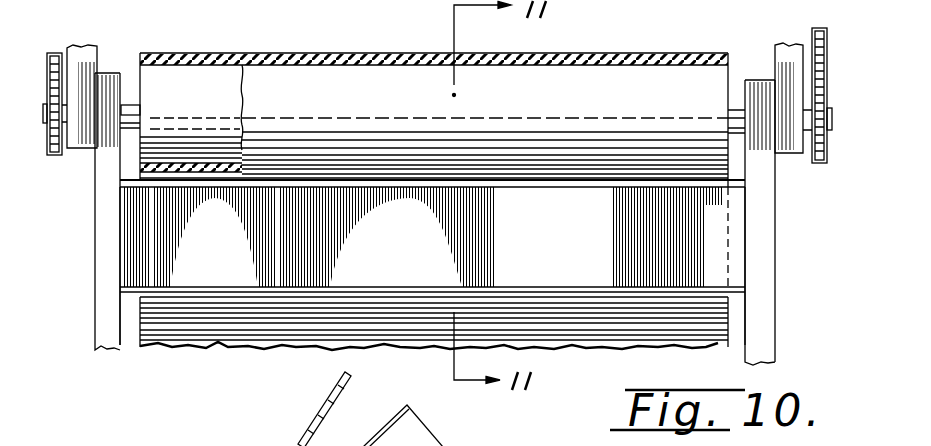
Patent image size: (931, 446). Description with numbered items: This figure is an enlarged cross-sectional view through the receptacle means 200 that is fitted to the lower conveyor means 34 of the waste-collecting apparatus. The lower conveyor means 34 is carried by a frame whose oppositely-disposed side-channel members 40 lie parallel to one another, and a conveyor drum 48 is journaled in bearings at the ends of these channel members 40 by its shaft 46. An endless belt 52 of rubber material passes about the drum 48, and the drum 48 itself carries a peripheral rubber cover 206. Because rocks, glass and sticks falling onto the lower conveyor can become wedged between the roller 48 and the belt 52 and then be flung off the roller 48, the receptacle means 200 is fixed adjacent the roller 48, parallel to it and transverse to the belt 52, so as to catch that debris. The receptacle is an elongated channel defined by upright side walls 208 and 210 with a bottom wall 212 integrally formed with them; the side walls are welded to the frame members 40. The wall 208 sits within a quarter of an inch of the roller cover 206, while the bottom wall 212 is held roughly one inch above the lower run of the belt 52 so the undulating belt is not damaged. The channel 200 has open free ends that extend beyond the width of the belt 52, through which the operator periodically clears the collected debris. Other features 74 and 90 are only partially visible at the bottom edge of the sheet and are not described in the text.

The lower conveyor means 34 is at (213, 338).
The side-channel member 40 is at (108, 258).
The shaft 46 is at (128, 112).
The conveyor drum 48 is at (190, 85).
The endless belt 52 is at (393, 58).
The hatched strip member 74 is at (265, 441).
The angle member 90 is at (371, 425).
The receptacle means 200 is at (698, 239).
The peripheral rubber cover 206 is at (295, 80).
The upright side wall 208 is at (157, 180).
The upright side wall 210 is at (700, 295).
The bottom wall 212 is at (557, 230).